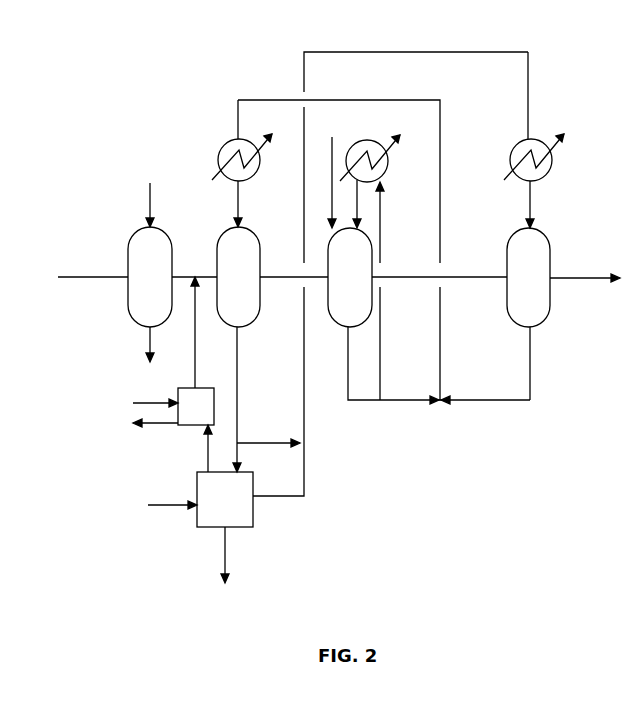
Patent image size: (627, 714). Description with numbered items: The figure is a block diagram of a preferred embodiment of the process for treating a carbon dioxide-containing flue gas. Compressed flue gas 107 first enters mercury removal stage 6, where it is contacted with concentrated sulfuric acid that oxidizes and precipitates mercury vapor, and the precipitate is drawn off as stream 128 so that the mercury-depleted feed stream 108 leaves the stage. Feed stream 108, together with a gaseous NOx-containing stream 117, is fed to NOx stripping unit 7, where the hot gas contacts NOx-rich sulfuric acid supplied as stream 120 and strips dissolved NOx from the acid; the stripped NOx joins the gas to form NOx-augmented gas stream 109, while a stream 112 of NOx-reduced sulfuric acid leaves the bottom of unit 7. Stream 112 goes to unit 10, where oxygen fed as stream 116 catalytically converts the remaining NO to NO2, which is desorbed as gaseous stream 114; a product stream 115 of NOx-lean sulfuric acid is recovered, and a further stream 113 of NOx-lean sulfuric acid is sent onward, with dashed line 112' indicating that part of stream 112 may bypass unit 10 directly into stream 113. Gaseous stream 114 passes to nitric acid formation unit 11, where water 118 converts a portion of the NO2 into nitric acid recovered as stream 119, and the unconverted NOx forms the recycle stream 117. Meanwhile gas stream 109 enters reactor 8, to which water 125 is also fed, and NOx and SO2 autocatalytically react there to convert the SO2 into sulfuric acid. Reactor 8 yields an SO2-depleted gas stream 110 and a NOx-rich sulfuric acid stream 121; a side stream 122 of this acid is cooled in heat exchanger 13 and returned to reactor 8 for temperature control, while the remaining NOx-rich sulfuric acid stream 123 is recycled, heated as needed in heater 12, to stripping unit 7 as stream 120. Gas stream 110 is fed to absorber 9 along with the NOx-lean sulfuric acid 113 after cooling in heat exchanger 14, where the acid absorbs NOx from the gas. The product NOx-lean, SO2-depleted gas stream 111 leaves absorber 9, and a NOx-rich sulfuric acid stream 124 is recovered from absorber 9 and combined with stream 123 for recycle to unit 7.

The mercury removal stage 6 is at (145, 284).
The NOx stripping unit 7 is at (245, 284).
The reactor 8 is at (346, 284).
The absorber 9 is at (532, 285).
The unit 10 is at (197, 527).
The nitric acid formation unit 11 is at (178, 426).
The heater 12 is at (236, 163).
The heat exchanger 13 is at (370, 174).
The heat exchanger 14 is at (528, 140).
The compressed flue gas 107 is at (93, 265).
The feed stream 108 is at (194, 265).
The NOx-augmented gas stream 109 is at (294, 265).
The SO2-depleted gas stream 110 is at (439, 265).
The product NOx-lean SO2-depleted gas stream 111 is at (585, 269).
The stream of NOx-reduced sulfuric acid 112 is at (258, 399).
The dashed line 112' is at (268, 442).
The stream of NOx-lean sulfuric acid 113 is at (390, 274).
The gaseous stream 114 is at (193, 448).
The product stream 115 is at (245, 555).
The oxygen stream 116 is at (172, 495).
The gaseous NOx-containing stream 117 is at (215, 332).
The water 118 is at (139, 406).
The nitric acid stream 119 is at (138, 430).
The NOx-rich sulfuric acid stream 120 is at (339, 237).
The NOx-rich sulfuric acid stream 121 is at (367, 379).
The side stream 122 is at (399, 291).
The remaining NOx-rich sulfuric acid stream 123 is at (455, 414).
The NOx-rich sulfuric acid stream 124 is at (510, 379).
The water 125 is at (337, 173).
The bottoms stream from vessel 6 128 is at (153, 354).